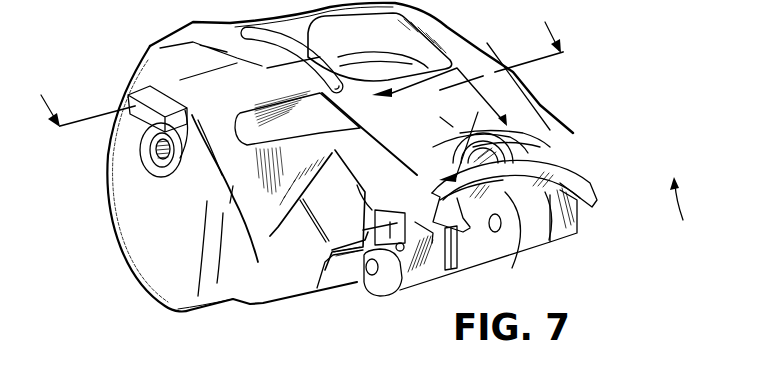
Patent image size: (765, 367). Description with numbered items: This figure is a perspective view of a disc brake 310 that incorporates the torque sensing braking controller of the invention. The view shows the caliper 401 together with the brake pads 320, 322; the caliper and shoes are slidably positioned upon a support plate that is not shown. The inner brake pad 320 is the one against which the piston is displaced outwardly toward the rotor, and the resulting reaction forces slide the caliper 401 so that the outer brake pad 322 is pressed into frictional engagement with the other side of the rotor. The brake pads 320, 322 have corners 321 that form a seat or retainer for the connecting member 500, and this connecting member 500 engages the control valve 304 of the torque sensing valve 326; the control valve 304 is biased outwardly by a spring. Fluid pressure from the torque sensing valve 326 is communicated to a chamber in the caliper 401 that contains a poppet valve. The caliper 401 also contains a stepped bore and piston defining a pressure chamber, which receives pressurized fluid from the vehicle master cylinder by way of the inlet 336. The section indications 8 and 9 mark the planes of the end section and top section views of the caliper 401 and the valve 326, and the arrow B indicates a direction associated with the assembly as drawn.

The section line 8- 8 is at (309, 80).
The section line 9- 9 is at (439, 125).
The disc brake 310 is at (108, 290).
The caliper 401 is at (187, 272).
The inlet 336 is at (160, 152).
The torque sensing valve 326 is at (508, 127).
The control valve 304 is at (520, 128).
The connecting member 500 is at (532, 160).
The corners 321 is at (580, 190).
The outer brake pad 322 is at (585, 220).
The inner brake pad 320 is at (400, 287).
The rotation direction B is at (686, 198).